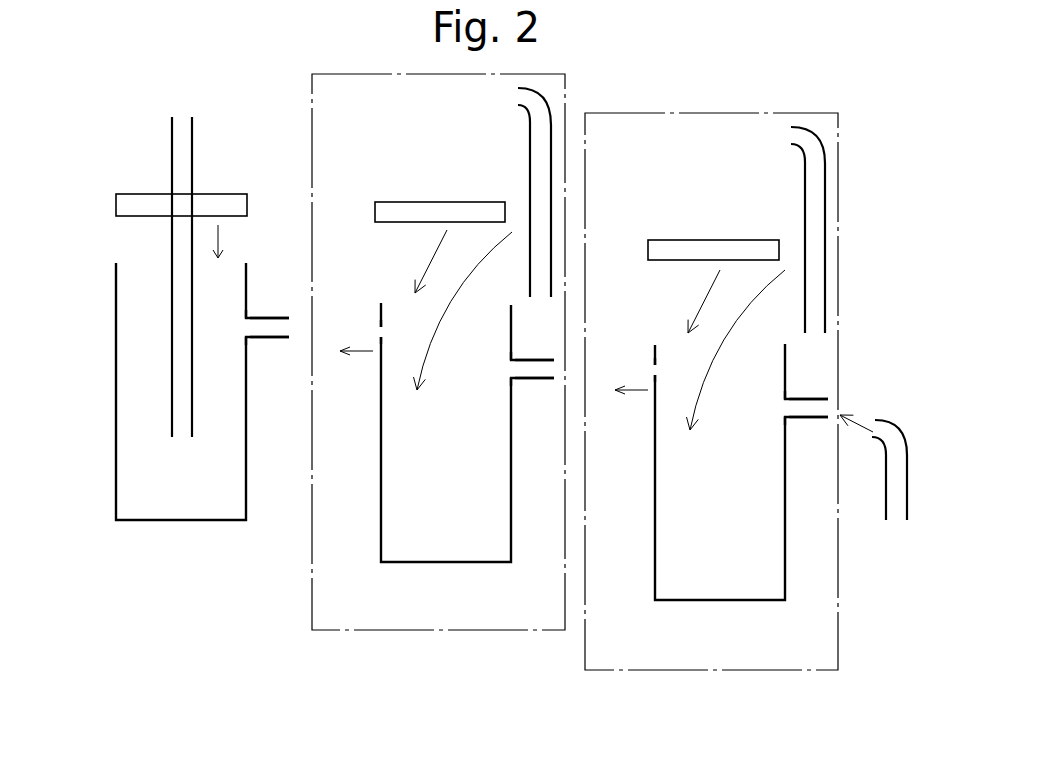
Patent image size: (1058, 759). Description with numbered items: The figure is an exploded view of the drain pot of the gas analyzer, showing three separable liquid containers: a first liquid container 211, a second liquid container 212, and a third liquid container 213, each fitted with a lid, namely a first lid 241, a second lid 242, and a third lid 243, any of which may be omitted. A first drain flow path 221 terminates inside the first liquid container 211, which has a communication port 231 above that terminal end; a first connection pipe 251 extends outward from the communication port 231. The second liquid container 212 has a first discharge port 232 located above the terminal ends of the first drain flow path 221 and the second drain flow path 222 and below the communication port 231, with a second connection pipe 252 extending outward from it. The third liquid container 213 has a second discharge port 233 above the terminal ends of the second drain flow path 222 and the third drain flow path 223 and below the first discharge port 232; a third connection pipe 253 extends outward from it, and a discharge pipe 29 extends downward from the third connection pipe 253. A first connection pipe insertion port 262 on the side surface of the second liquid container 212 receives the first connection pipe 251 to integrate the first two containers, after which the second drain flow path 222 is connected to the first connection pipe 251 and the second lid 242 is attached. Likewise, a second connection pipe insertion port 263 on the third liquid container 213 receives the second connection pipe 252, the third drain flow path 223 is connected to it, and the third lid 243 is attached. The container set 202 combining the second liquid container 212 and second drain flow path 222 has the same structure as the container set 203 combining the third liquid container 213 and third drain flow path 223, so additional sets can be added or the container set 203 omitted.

The discharge pipe 29 is at (890, 443).
The container set 202 is at (308, 633).
The container set 203 is at (583, 672).
The first liquid container 211 is at (142, 503).
The second liquid container 212 is at (408, 542).
The third liquid container 213 is at (683, 580).
The first drain flow path 221 is at (180, 347).
The second drain flow path 222 is at (542, 178).
The third drain flow path 223 is at (815, 217).
The communication port 231 is at (248, 327).
The first discharge port 232 is at (512, 368).
The second discharge port 233 is at (785, 407).
The first lid 241 is at (140, 208).
The second lid 242 is at (420, 215).
The third lid 243 is at (693, 252).
The first connection pipe 251 is at (263, 327).
The second connection pipe 252 is at (528, 370).
The third connection pipe 253 is at (800, 410).
The first connection pipe insertion port 262 is at (380, 325).
The second connection pipe insertion port 263 is at (655, 365).